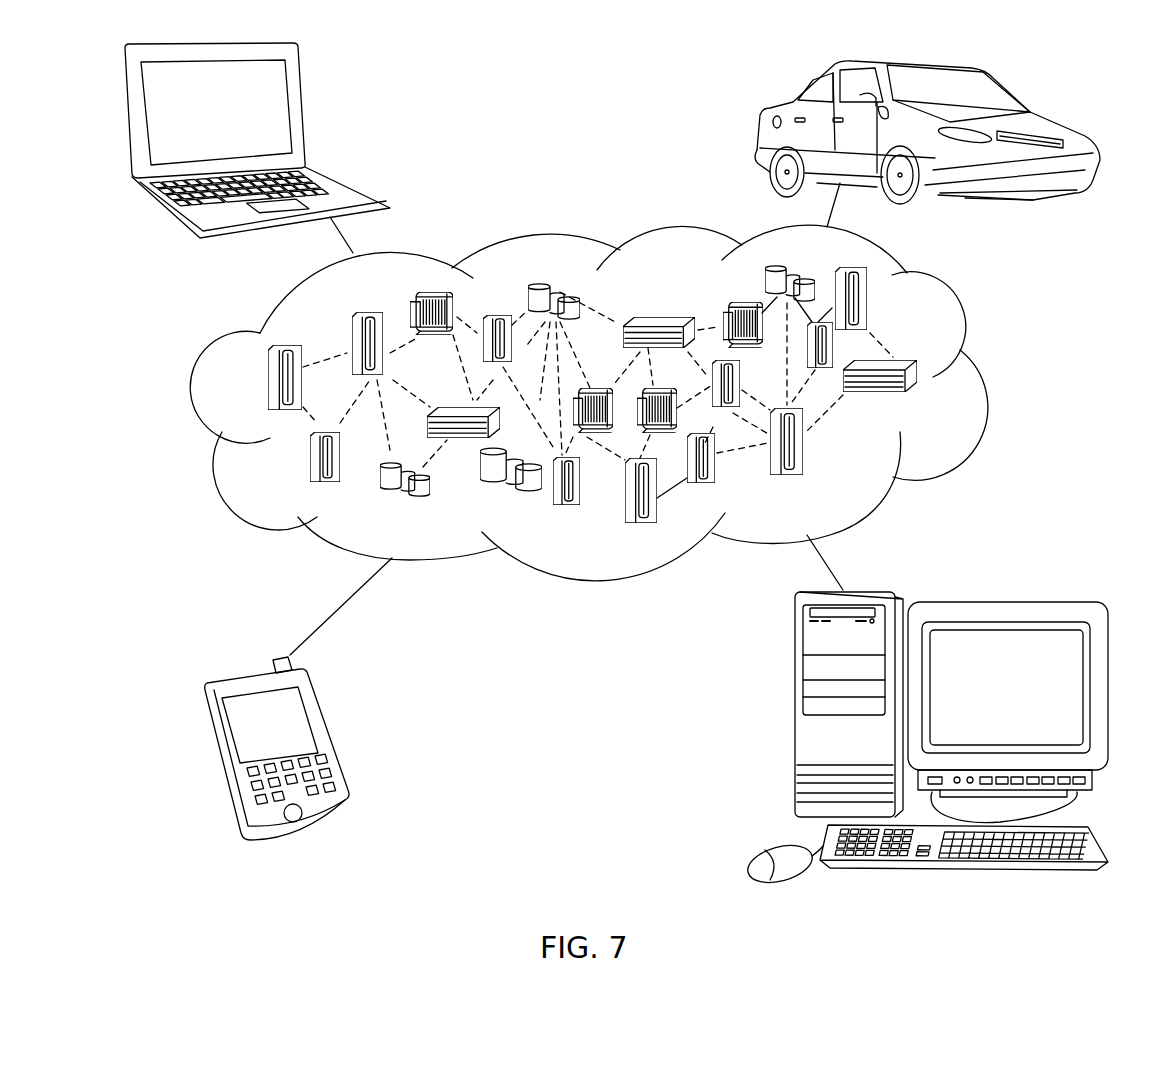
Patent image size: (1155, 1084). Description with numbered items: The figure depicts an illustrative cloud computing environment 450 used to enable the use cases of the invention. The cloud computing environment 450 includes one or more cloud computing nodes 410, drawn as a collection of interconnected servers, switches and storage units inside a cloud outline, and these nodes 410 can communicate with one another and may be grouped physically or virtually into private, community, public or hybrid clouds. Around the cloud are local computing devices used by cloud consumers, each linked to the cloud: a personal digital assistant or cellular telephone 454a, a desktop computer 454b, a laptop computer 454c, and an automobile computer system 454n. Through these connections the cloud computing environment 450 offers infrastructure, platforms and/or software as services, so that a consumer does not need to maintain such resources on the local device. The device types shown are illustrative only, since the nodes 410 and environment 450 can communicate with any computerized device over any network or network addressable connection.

The cloud computing nodes 410 is at (940, 398).
The cloud computing environment 450 is at (965, 312).
The personal digital assistant (PDA) or cellular telephone 454a is at (327, 730).
The desktop computer 454b is at (795, 712).
The laptop computer 454c is at (303, 100).
The automobile computer system 454n is at (770, 112).